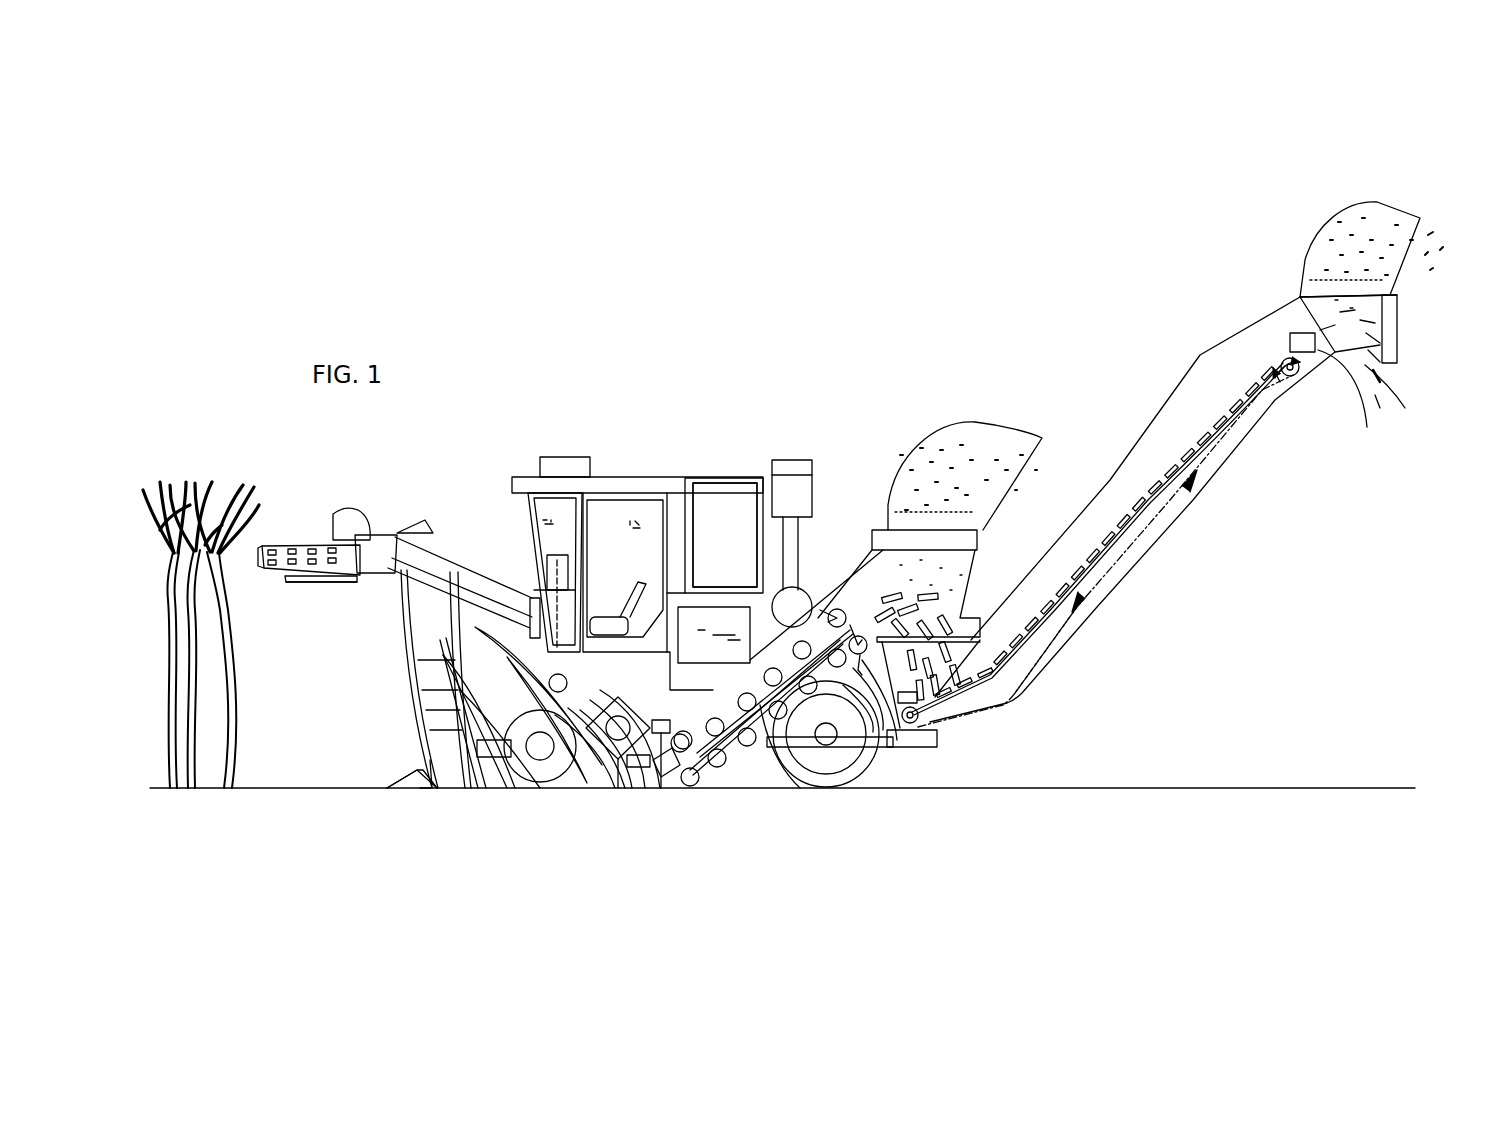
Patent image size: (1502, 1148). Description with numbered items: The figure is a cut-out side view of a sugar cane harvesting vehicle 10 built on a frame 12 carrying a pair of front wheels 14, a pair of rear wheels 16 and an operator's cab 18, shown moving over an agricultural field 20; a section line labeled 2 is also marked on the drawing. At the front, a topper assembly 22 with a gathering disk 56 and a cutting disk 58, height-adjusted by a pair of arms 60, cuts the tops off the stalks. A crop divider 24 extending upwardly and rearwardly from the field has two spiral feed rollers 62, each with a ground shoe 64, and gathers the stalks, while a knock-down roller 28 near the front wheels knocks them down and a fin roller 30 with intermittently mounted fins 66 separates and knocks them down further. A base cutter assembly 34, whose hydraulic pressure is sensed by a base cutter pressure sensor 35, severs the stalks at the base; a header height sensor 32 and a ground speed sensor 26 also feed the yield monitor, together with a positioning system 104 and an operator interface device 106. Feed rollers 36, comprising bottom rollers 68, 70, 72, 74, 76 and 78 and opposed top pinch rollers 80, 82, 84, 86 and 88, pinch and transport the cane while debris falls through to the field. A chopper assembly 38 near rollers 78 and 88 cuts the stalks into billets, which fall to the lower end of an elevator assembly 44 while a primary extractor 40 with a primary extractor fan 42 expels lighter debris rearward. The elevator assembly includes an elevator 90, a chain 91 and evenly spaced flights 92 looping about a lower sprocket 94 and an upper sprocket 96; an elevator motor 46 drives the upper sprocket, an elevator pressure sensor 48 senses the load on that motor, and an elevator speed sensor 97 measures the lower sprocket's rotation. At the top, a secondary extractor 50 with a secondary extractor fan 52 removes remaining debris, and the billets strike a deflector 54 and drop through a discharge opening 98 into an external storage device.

The sugar cane harvesting vehicle 10 is at (668, 335).
The frame 12 is at (600, 688).
The front wheels 14 is at (543, 773).
The rear wheels 16 is at (867, 760).
The operator's cab 18 is at (655, 470).
The agricultural field 20 is at (262, 790).
The topper assembly 22 is at (355, 500).
The crop divider 24 is at (415, 752).
The ground speed sensor 26 is at (487, 787).
The knock-down roller 28 is at (562, 676).
The fin roller 30 is at (633, 770).
The header height sensor 32 is at (670, 773).
The base cutter assembly 34 is at (680, 780).
The base cutter pressure sensor 35 is at (643, 783).
The feed rollers 36 is at (723, 780).
The chopper assembly 38 is at (838, 612).
The primary extractor 40 is at (977, 420).
The primary extractor fan 42 is at (888, 505).
The elevator assembly 44 is at (1183, 490).
The elevator motor 46 is at (1290, 352).
The elevator pressure sensor 48 is at (1392, 400).
The secondary extractor 50 is at (1362, 200).
The secondary extractor fan 52 is at (1300, 272).
The deflector 54 is at (1390, 325).
The gathering disk 56 is at (266, 565).
The cutting disk 58 is at (302, 582).
The arms 60 is at (433, 567).
The spiral feed rollers 62 is at (427, 783).
The ground shoe 64 is at (400, 790).
The fins 66 is at (613, 753).
The bottom roller 68 is at (720, 780).
The bottom roller 70 is at (720, 760).
The bottom roller 72 is at (767, 740).
The bottom roller 74 is at (860, 740).
The bottom roller 76 is at (873, 750).
The bottom roller 78 is at (893, 707).
The top pinch roller 80 is at (676, 740).
The top pinch roller 82 is at (717, 727).
The top pinch roller 84 is at (745, 700).
The top pinch roller 86 is at (800, 690).
The top pinch roller 88 is at (770, 640).
The elevator 90 is at (1225, 418).
The chain 91 is at (1230, 463).
The flights 92 is at (1127, 507).
The lower sprocket 94 is at (920, 716).
The upper sprocket 96 is at (1368, 428).
The elevator speed sensor 97 is at (1007, 703).
The discharge opening 98 is at (1383, 363).
The positioning system 104 is at (567, 458).
The operator interface device 106 is at (553, 558).
The section line 2- 2 is at (1291, 381).